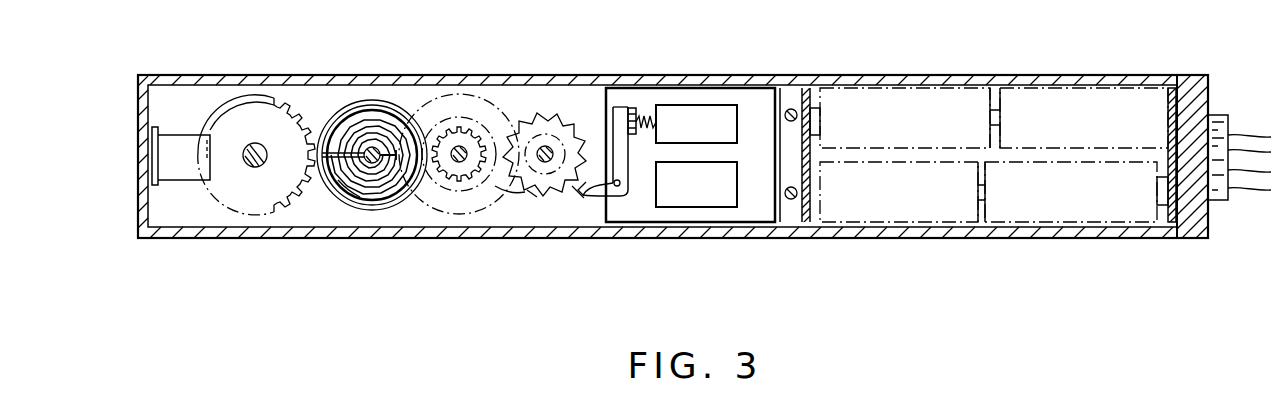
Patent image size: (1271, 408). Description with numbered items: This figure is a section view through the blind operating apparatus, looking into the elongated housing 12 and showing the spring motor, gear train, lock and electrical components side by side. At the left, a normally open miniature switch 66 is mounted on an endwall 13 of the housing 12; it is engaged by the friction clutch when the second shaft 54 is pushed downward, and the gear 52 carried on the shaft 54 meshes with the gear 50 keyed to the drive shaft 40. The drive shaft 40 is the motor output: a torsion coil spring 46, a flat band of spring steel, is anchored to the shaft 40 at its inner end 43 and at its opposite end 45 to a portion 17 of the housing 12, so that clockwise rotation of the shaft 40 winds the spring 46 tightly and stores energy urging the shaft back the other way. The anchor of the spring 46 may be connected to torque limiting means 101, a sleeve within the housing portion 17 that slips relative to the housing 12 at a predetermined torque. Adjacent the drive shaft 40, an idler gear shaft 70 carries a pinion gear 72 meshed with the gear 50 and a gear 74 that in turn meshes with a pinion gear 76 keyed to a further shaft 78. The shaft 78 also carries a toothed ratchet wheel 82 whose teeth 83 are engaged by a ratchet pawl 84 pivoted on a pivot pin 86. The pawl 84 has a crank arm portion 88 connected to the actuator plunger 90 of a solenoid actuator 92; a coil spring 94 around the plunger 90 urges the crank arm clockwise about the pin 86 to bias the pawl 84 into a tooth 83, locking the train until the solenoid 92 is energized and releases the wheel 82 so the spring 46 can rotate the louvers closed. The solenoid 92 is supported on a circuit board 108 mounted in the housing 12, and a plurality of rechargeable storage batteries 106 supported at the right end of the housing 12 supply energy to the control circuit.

The housing 12 is at (202, 77).
The endwall 13 is at (137, 157).
The housing portion 17 is at (403, 108).
The drive shaft 40 is at (372, 168).
The inner end anchor 43 is at (382, 165).
The opposite end of spring 45 is at (353, 185).
The torsion coil spring 46 is at (367, 120).
The gear 50 is at (323, 120).
The gear 52 is at (293, 112).
The second shaft 54 is at (262, 148).
The miniature switch 66 is at (180, 167).
The idler gear shaft 70 is at (460, 150).
The pinion gear 72 is at (443, 120).
The gear 74 is at (505, 190).
The pinion gear 76 is at (530, 192).
The shaft 78 is at (583, 150).
The toothed ratchet wheel 82 is at (542, 117).
The teeth 83 is at (577, 192).
The ratchet pawl 84 is at (597, 195).
The pivot pin 86 is at (620, 183).
The crank arm portion 88 is at (620, 120).
The actuator plunger 90 is at (656, 124).
The solenoid actuator 92 is at (710, 110).
The coil spring 94 is at (645, 115).
The torque limiting means 101 is at (370, 165).
The rechargeable storage batteries 106 is at (922, 110).
The circuit board 108 is at (755, 205).